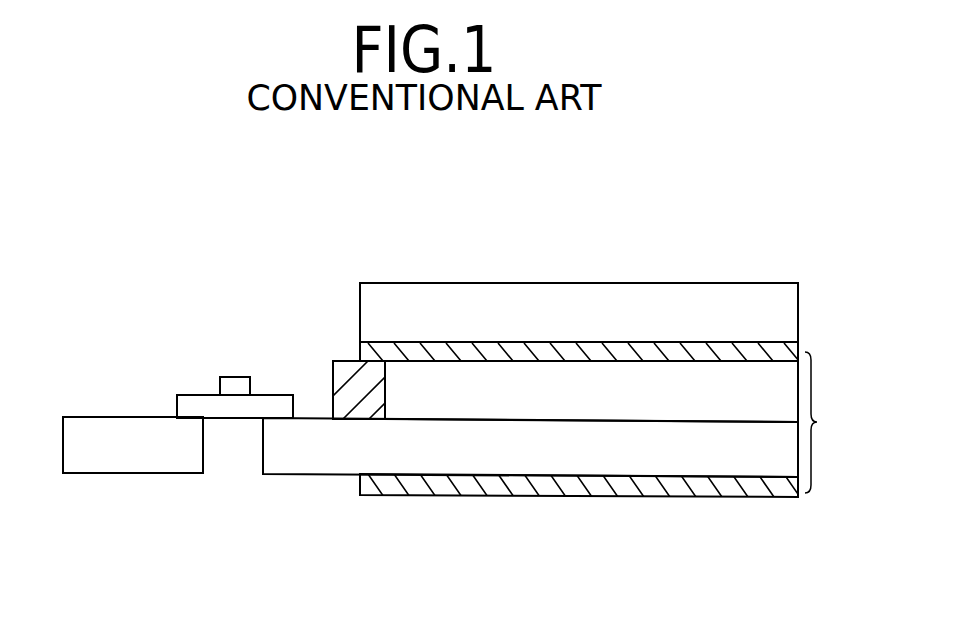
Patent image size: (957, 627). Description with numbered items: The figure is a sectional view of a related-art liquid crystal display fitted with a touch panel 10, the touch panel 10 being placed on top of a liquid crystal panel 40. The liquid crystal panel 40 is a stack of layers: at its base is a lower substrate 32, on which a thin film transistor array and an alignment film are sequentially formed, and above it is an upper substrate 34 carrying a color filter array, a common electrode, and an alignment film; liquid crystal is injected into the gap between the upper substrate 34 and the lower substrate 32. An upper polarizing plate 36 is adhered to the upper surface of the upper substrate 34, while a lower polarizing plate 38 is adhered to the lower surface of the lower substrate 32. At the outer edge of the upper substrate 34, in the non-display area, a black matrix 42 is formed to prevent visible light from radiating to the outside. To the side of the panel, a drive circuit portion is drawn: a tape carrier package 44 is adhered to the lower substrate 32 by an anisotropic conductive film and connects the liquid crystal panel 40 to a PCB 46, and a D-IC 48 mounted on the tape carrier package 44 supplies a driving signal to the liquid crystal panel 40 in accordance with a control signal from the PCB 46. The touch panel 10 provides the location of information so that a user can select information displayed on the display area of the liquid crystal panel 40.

The touch panel 10 is at (780, 313).
The lower substrate 32 is at (323, 460).
The upper substrate 34 is at (707, 403).
The upper polarizing plate 36 is at (372, 348).
The lower polarizing plate 38 is at (780, 487).
The liquid crystal panel 40 is at (832, 422).
The black matrix 42 is at (333, 385).
The tape carrier package (TCP) 44 is at (188, 407).
The PCB 46 is at (85, 463).
The D-IC 48 is at (224, 385).